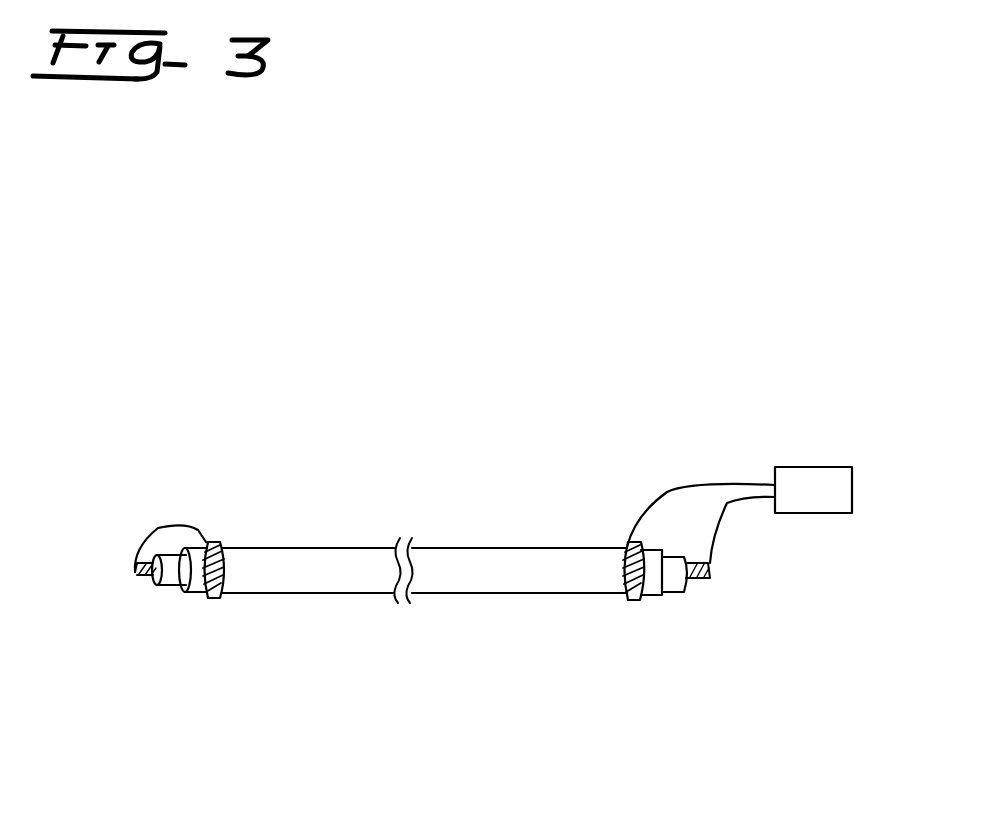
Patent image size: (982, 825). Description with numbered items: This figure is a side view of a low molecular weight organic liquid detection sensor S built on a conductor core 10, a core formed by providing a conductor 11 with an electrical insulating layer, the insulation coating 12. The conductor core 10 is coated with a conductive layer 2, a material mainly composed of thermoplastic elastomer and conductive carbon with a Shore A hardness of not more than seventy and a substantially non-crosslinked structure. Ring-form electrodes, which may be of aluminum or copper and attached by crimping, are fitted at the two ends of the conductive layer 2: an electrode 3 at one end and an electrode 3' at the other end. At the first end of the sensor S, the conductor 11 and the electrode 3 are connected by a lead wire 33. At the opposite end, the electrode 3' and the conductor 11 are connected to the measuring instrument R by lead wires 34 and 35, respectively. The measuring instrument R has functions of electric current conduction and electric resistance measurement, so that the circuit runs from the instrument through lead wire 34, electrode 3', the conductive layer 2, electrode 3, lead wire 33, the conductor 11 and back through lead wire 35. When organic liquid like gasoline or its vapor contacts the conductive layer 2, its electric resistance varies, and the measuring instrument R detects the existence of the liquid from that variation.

The conductive layer 2 is at (283, 557).
The electrode 3 is at (228, 618).
The electrode 3' is at (664, 641).
The conductor core 10 is at (137, 583).
The conductor 11 is at (140, 580).
The insulation coating 12 is at (170, 582).
The lead wire 33 is at (167, 527).
The lead wire 34 is at (692, 485).
The lead wire 35 is at (718, 530).
The low molecular weight organic liquid detection sensor S is at (467, 523).
The measuring instrument R is at (817, 480).